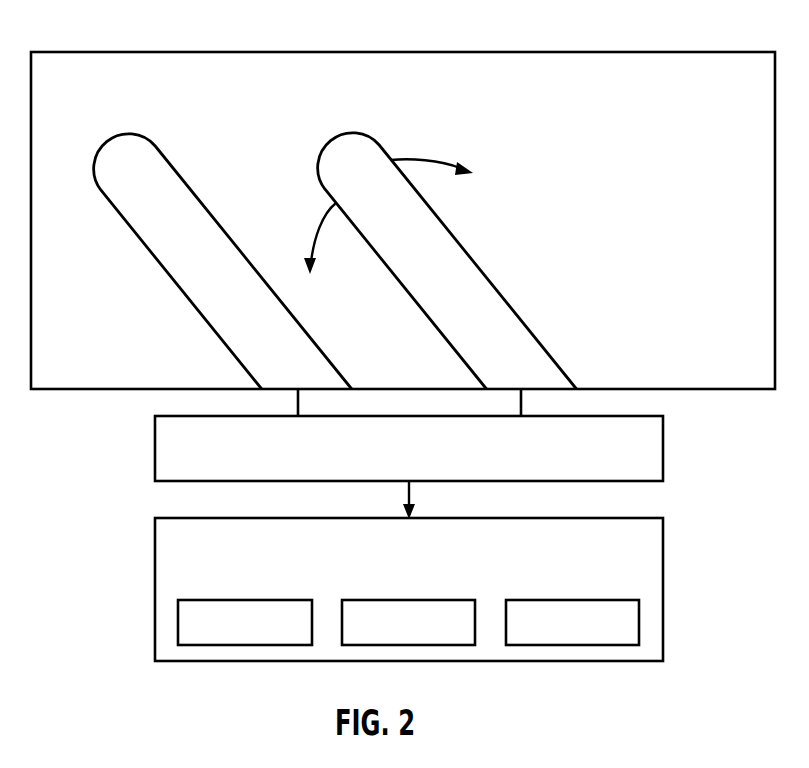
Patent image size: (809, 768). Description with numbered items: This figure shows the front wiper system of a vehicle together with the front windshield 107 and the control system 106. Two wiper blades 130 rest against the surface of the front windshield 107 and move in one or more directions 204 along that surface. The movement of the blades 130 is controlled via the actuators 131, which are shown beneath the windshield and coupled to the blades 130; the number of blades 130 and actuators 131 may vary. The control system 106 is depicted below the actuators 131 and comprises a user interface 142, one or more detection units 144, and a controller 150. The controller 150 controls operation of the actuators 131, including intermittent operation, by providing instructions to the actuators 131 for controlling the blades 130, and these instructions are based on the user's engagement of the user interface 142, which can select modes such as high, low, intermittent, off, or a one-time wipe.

The front windshield 107 is at (107, 52).
The blades 130 is at (108, 139).
The directions 204 is at (317, 222).
The actuators 131 is at (155, 447).
The control system 106 is at (155, 547).
The user interface 142 is at (245, 600).
The detection units 144 is at (408, 600).
The controller 150 is at (572, 600).